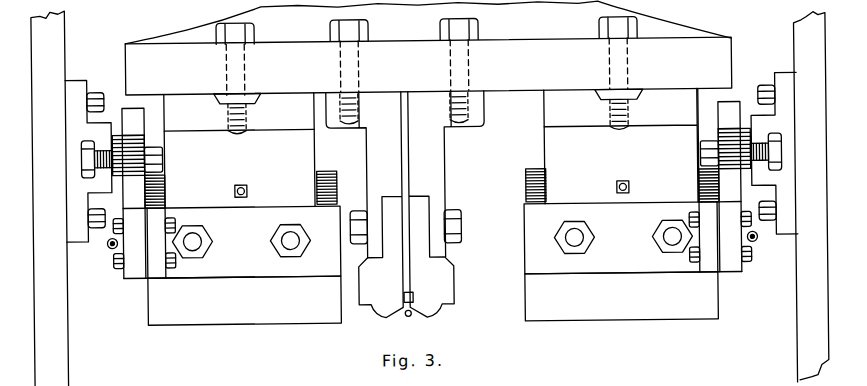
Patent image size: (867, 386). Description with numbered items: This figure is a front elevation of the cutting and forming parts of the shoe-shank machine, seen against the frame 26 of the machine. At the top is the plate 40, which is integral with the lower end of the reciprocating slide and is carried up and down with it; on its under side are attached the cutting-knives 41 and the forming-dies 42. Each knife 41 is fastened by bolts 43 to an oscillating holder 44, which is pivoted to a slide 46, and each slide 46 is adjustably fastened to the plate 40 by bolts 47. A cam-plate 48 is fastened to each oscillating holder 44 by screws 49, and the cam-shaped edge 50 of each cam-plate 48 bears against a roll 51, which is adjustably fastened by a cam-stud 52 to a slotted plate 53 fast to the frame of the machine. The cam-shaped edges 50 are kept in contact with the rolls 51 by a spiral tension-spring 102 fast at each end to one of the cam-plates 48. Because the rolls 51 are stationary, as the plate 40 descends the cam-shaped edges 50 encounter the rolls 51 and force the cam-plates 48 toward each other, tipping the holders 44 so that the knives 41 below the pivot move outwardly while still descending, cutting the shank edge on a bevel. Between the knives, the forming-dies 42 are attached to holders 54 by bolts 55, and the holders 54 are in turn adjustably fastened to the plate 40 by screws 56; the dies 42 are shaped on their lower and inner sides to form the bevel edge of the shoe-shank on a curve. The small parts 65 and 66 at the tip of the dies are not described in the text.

The frame 26 is at (67, 311).
The plate 40 is at (428, 66).
The cutting-knives 41 is at (433, 298).
The forming-dies 42 is at (406, 204).
The bolts 43 is at (287, 244).
The oscillating holder 44 is at (432, 229).
The slide 46 is at (431, 149).
The bolts 47 is at (252, 28).
The cam-plate 48 is at (128, 124).
The screws 49 is at (112, 257).
The cam-shaped edge 50 is at (144, 120).
The roll 51 is at (133, 146).
The cam-stud 52 is at (107, 162).
The slotted plate 53 is at (431, 157).
The holders 54 is at (430, 174).
The bolts 55 is at (462, 223).
The screws 56 is at (478, 29).
The guide 65 is at (409, 313).
The wire 66 is at (405, 314).
The spiral tension-spring 102 is at (757, 238).